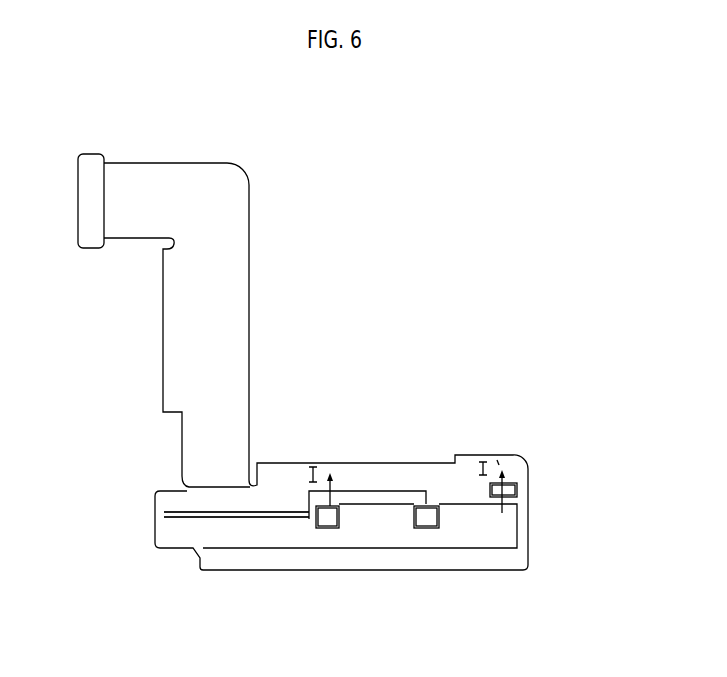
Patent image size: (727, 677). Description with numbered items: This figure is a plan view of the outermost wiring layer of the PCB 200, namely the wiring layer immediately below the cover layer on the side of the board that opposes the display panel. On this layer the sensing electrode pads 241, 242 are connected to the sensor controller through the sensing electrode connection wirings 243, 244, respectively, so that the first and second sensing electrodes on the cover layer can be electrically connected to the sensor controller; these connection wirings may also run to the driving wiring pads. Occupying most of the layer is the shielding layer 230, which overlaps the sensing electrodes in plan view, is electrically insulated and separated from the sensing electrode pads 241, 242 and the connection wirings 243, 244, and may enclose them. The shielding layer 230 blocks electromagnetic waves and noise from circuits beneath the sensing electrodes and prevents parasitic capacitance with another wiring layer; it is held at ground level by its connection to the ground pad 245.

The PCB 200 is at (464, 198).
The shielding layer 230 is at (503, 532).
The sensing electrode pad 241 is at (326, 528).
The sensing electrode pad 242 is at (433, 528).
The sensing electrode connection wiring 243 is at (253, 518).
The sensing electrode connection wiring 244 is at (378, 493).
The ground pad 245 is at (517, 492).